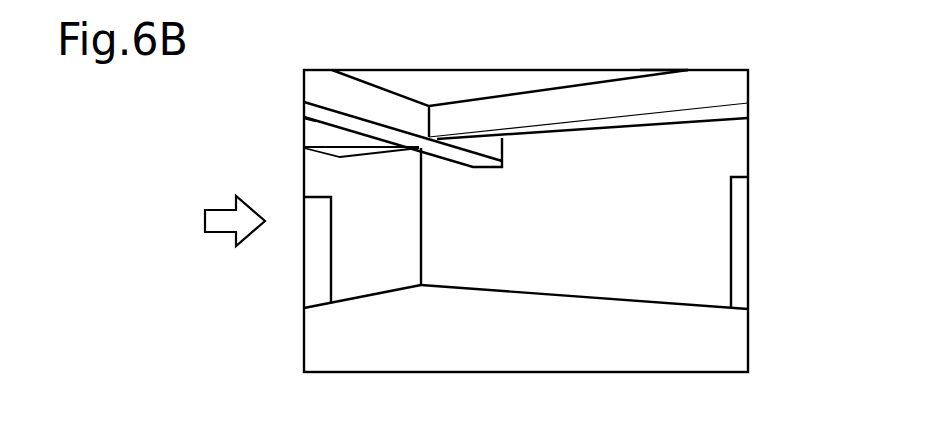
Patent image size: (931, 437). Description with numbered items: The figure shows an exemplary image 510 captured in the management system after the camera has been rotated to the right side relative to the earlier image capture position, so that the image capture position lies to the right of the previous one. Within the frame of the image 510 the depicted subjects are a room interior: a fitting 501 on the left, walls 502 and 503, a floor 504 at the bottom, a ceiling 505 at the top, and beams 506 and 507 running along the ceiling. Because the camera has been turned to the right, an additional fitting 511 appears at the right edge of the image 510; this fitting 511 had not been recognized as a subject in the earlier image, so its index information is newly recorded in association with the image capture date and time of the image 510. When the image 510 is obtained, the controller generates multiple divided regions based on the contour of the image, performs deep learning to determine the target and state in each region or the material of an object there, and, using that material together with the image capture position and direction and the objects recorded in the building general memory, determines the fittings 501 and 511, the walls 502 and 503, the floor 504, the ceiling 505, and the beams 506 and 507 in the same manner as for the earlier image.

The fitting 501 is at (320, 238).
The wall 502 is at (392, 277).
The wall 503 is at (586, 291).
The floor 504 is at (317, 342).
The ceiling 505 is at (540, 105).
The beam 506 is at (478, 167).
The beam 507 is at (598, 127).
The image 510 is at (667, 68).
The fitting 511 is at (737, 236).